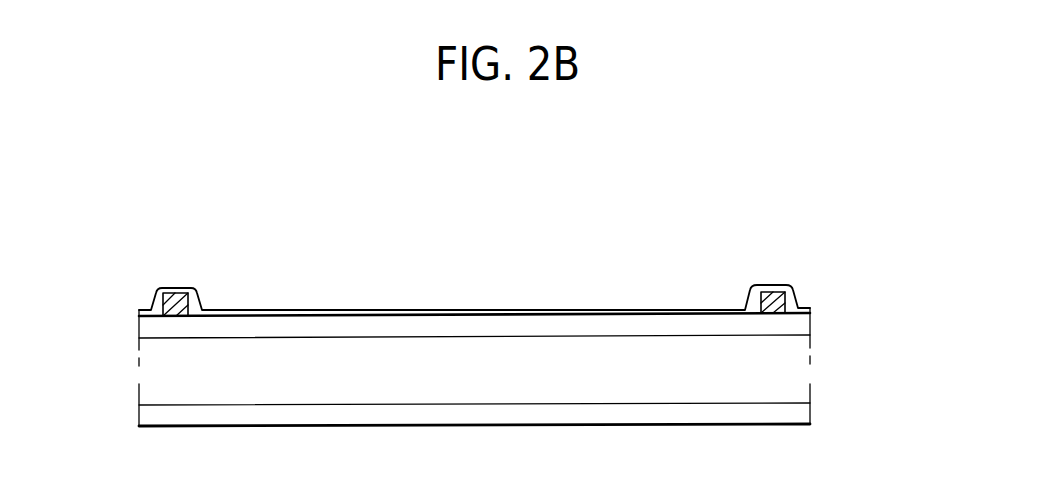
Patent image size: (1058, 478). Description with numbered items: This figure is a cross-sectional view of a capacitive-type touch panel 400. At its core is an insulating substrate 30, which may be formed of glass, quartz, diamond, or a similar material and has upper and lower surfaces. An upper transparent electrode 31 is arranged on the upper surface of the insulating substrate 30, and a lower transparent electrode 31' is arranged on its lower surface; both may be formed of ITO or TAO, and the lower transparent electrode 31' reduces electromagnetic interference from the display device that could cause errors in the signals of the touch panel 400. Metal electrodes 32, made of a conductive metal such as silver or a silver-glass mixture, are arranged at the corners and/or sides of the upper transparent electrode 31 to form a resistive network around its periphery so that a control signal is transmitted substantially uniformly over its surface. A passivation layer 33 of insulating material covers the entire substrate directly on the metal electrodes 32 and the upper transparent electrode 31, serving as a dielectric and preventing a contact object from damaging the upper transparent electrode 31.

The capacitive-type touch panel 400 is at (753, 187).
The passivation layer 33 is at (618, 309).
The metal electrodes 32 is at (770, 292).
The upper transparent electrode 31 is at (509, 321).
The insulating substrate 30 is at (800, 367).
The lower transparent electrode 31' is at (512, 411).